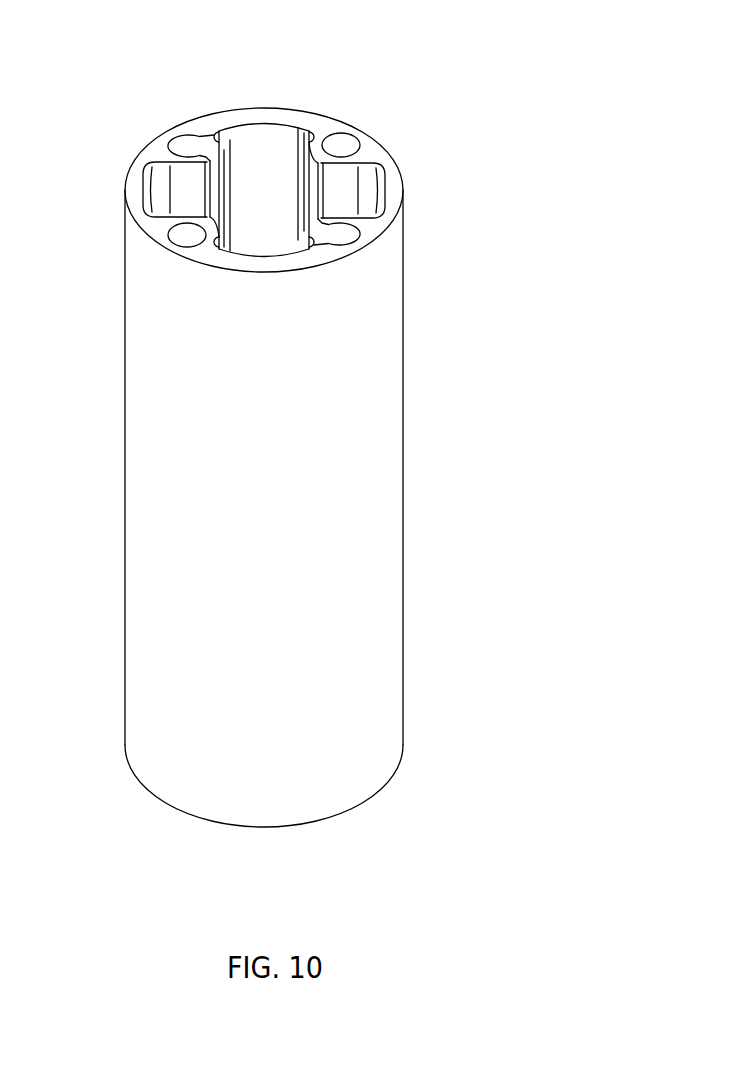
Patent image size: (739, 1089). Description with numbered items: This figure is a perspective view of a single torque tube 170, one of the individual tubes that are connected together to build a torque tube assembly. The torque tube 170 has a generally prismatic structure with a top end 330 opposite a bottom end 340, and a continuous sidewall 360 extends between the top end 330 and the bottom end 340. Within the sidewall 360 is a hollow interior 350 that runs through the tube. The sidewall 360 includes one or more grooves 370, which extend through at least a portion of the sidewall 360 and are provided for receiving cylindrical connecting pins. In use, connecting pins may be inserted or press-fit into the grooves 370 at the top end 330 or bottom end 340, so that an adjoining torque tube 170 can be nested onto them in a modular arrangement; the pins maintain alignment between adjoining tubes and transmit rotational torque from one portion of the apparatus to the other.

The torque tube 170 is at (497, 123).
The top end 330 is at (175, 134).
The bottom end 340 is at (181, 811).
The hollow interior 350 is at (289, 197).
The sidewall 360 is at (247, 116).
The groove 370 is at (345, 146).